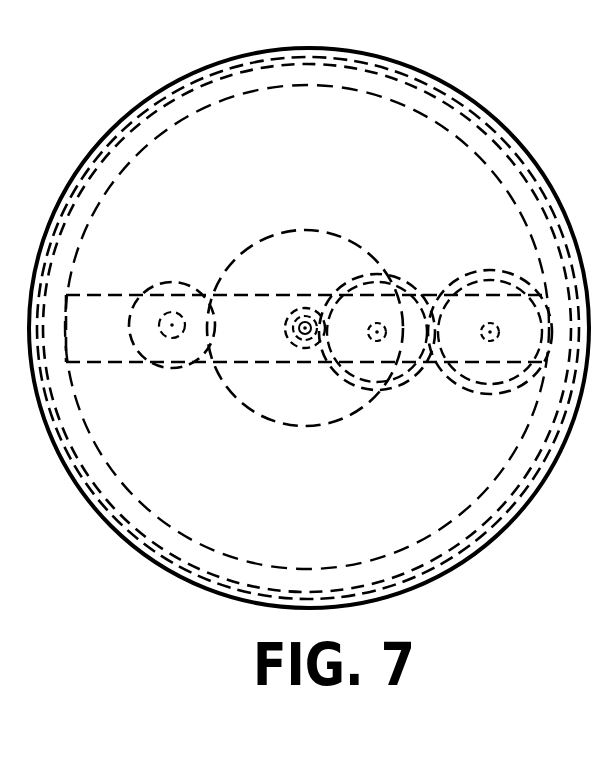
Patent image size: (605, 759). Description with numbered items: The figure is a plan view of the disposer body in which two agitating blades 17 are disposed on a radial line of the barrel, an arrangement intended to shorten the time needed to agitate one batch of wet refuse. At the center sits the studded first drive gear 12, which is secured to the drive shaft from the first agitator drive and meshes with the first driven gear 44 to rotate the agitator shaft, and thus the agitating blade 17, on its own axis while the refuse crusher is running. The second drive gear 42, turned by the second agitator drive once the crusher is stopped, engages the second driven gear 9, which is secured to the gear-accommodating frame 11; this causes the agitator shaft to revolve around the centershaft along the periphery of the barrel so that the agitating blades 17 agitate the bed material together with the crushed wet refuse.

The second driven gear 9 is at (372, 247).
The gear-accommodating frame 11 is at (93, 364).
The first drive gear 12 is at (296, 340).
The agitating blade 17 is at (484, 271).
The second drive gear 42 is at (177, 280).
The first driven gear 44 is at (478, 392).